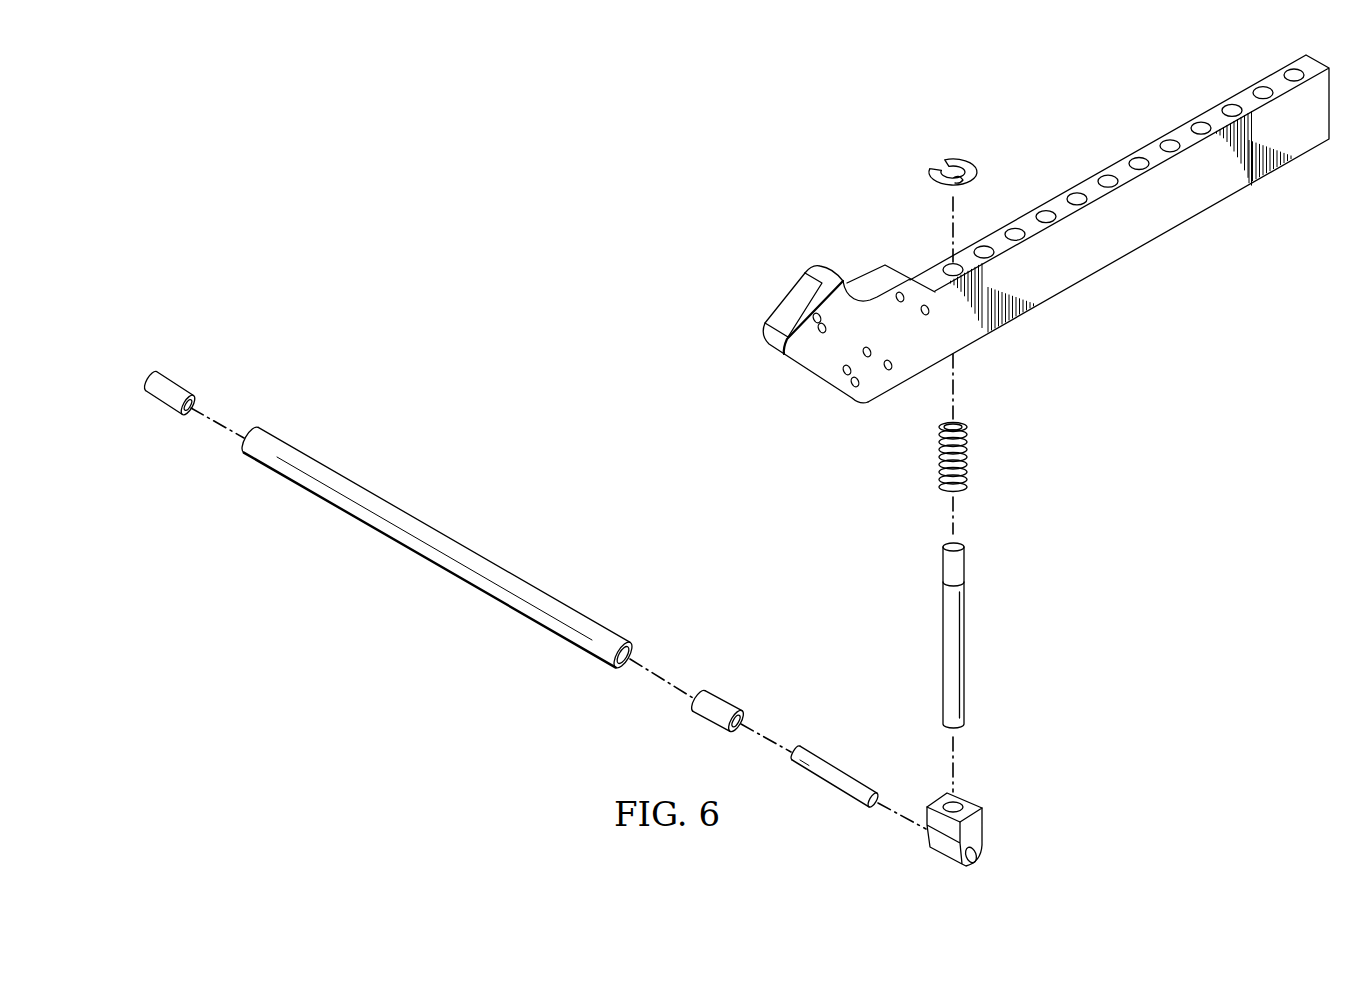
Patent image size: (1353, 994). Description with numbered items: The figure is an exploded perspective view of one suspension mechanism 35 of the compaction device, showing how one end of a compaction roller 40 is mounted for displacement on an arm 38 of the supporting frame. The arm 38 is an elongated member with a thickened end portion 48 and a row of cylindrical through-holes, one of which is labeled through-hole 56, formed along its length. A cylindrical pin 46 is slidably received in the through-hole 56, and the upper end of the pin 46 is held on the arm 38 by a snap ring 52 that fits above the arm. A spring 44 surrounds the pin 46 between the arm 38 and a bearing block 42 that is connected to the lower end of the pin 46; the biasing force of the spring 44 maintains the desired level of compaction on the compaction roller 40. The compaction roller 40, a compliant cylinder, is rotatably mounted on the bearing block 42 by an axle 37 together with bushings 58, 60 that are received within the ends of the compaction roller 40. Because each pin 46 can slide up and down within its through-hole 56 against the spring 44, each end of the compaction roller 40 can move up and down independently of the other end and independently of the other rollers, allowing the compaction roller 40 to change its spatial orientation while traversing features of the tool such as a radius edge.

The suspension mechanism 35 is at (1040, 499).
The axle 37 is at (832, 786).
The arm 38 is at (1113, 263).
The compaction roller 40 is at (430, 561).
The bearing block 42 is at (976, 824).
The spring 44 is at (968, 455).
The cylindrical pin 46 is at (966, 652).
The end body 48 is at (822, 378).
The snap ring 52 is at (950, 156).
The hole 56 is at (1052, 208).
The bushing 58 is at (710, 729).
The bushing 60 is at (163, 411).